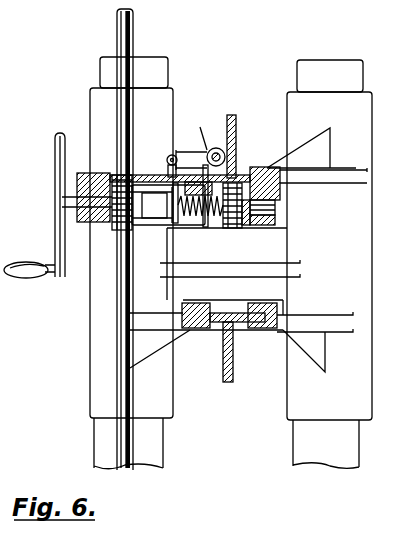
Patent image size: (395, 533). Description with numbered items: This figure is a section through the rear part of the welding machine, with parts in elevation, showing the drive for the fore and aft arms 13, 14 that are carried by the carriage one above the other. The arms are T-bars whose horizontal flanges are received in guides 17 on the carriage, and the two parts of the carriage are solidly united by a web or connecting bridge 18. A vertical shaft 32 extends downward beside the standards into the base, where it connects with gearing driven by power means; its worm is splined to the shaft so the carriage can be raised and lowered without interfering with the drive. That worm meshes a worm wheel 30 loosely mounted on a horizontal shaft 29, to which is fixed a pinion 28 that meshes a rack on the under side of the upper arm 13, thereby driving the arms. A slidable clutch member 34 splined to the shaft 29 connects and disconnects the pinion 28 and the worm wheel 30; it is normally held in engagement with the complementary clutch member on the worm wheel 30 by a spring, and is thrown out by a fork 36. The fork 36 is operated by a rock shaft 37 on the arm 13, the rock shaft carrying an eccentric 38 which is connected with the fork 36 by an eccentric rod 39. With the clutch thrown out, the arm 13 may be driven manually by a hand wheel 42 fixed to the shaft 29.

The fore and aft radial arm 13 is at (236, 160).
The fore and aft radial arm 14 is at (240, 328).
The guides 17 is at (262, 170).
The web or connecting bridge 18 is at (236, 219).
The pinion 28 is at (222, 223).
The horizontal shaft 29 is at (277, 210).
The worm wheel 30 is at (112, 232).
The vertical shaft 32 is at (117, 388).
The slidable clutch member 34 is at (150, 186).
The fork 36 is at (170, 157).
The rock shaft 37 is at (217, 146).
The eccentric 38 is at (199, 130).
The eccentric rod 39 is at (183, 158).
The hand wheel 42 is at (62, 128).